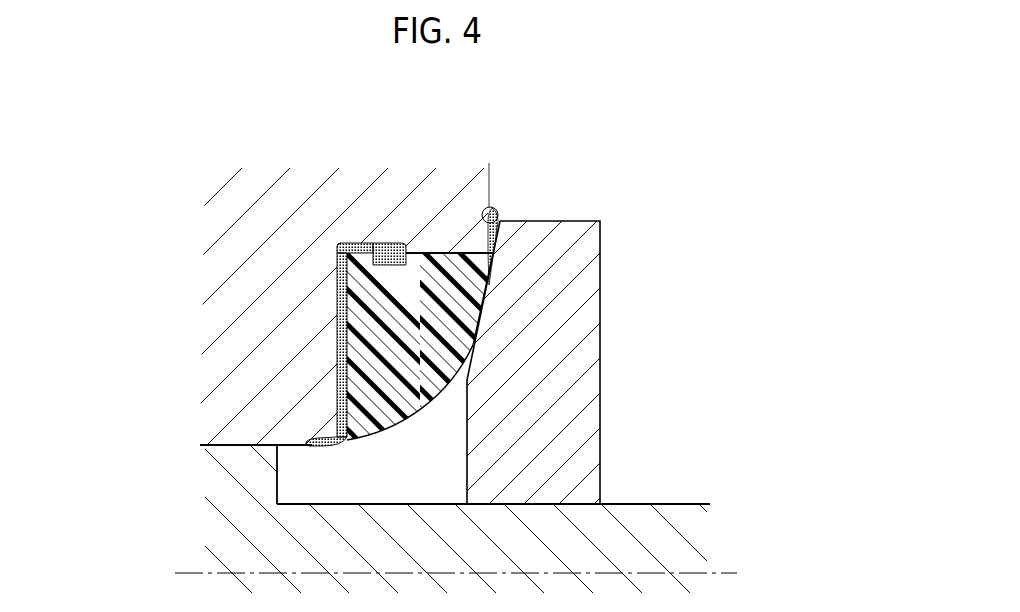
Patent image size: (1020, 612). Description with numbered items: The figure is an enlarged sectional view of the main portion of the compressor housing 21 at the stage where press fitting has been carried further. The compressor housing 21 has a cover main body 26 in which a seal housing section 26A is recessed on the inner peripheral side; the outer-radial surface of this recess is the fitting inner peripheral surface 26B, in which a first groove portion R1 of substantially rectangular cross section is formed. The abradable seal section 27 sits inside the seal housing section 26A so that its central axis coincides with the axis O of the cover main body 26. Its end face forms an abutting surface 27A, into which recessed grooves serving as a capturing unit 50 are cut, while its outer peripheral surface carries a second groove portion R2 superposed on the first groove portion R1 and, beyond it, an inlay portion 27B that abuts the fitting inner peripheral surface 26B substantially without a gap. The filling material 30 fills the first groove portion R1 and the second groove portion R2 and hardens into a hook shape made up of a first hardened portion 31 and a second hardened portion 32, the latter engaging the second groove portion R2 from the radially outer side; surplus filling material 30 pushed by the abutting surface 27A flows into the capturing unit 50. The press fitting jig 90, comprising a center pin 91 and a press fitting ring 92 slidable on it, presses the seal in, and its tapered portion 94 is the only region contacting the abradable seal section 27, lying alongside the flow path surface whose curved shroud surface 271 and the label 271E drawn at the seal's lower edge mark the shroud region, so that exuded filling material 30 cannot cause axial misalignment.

The compressor housing 21 is at (392, 286).
The cover main body 26 is at (392, 286).
The seal housing section 26A is at (458, 168).
The fitting inner peripheral surface 26B is at (482, 283).
The abradable seal section 27 is at (441, 352).
The abutting surface 27A is at (338, 298).
The inlay portion 27B is at (440, 252).
The filling material 30 is at (251, 252).
The first hardened portion 31 is at (362, 243).
The second hardened portion 32 is at (390, 258).
The capturing unit 50 is at (251, 252).
The press fitting jig 90 is at (541, 308).
The center pin 91 is at (633, 517).
The press fitting ring 92 is at (588, 386).
The tapered portion 94 is at (486, 203).
The shroud surface 271 is at (219, 469).
The first lip end 271E is at (383, 445).
The first groove portion R1 is at (336, 258).
The second groove portion R2 is at (420, 253).
The axis O is at (727, 572).